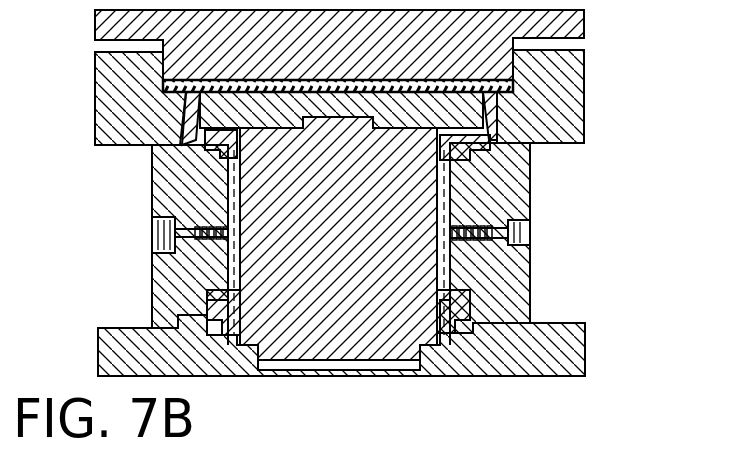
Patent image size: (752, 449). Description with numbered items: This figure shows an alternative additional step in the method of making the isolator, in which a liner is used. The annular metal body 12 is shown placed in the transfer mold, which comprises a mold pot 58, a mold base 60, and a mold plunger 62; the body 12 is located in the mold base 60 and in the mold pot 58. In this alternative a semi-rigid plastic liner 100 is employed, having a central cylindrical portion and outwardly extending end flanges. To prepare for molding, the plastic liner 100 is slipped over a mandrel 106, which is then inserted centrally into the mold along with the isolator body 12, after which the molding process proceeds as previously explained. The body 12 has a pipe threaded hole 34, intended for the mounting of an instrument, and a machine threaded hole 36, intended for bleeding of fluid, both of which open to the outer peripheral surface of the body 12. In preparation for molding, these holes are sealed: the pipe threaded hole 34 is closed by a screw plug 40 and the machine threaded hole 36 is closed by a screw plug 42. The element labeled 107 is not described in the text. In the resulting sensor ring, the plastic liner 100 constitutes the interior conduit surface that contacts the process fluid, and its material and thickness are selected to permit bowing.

The mold plunger 62 is at (584, 22).
The mold pot 58 is at (584, 95).
The body 12 is at (530, 180).
The machine threaded hole 36 is at (530, 207).
The screw plug 40 is at (530, 235).
The mold base 60 is at (563, 323).
The pipe threaded hole 34 is at (156, 210).
The screw plug 42 is at (152, 240).
The liner sleeve 107 is at (223, 275).
The mandrel 106 is at (320, 376).
The plastic liner 100 is at (430, 300).